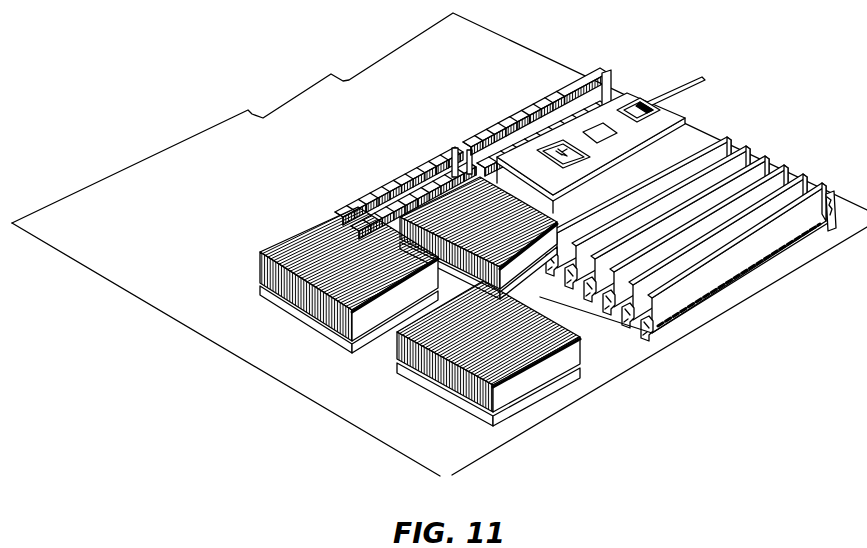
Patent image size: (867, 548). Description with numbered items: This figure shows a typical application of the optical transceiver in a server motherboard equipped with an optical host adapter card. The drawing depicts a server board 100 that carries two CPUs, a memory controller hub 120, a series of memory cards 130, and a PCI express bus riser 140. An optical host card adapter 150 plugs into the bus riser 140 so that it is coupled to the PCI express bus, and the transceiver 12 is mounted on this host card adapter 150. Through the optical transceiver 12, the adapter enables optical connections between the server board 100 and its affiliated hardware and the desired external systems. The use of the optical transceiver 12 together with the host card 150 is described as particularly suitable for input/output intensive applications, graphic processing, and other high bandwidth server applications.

The server board 100 is at (550, 417).
The memory controller hub 120 is at (512, 279).
The memory cards 130 is at (678, 282).
The PCI express bus riser 140 is at (552, 103).
The transceiver 12 is at (630, 107).
The optical host card adapter 150 is at (678, 115).